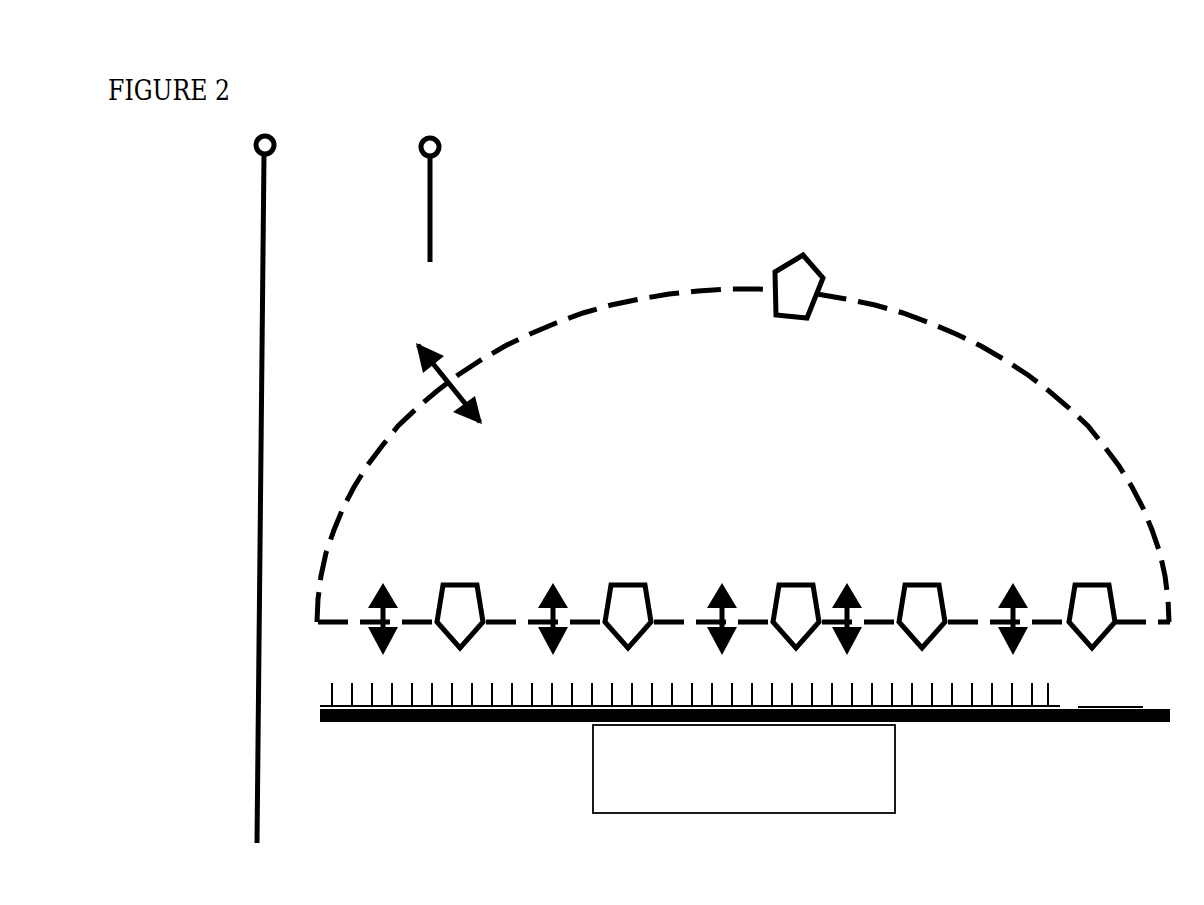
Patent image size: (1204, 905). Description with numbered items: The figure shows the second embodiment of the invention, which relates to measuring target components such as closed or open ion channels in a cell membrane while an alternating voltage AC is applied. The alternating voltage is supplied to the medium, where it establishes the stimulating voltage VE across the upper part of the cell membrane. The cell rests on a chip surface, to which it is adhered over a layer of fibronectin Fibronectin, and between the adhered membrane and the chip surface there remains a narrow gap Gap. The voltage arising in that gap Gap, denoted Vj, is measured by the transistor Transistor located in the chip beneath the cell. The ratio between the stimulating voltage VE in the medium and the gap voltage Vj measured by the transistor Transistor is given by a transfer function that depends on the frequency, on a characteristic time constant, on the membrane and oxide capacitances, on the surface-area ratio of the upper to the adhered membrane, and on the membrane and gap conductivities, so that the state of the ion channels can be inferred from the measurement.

The AC voltage AC is at (326, 473).
The stimulating voltage V_E VE is at (743, 404).
The gap voltage V_j Vj is at (744, 635).
The gap Gap is at (690, 683).
The fibronectin layer Fibronectin is at (757, 700).
The transistor Transistor is at (744, 769).